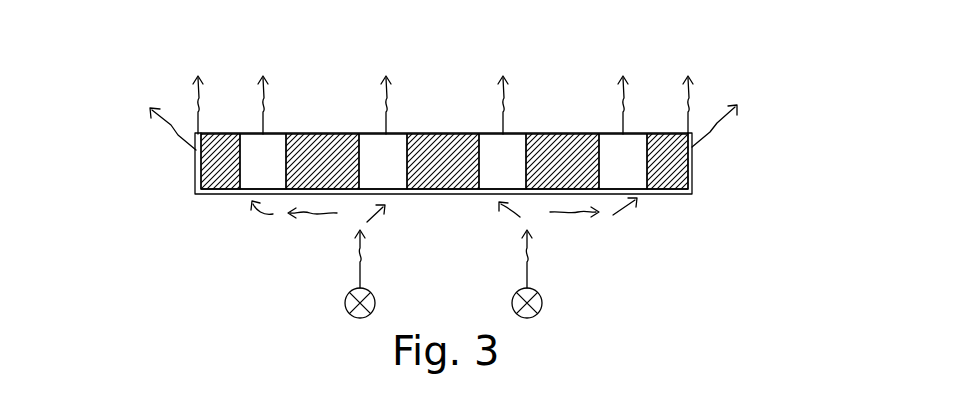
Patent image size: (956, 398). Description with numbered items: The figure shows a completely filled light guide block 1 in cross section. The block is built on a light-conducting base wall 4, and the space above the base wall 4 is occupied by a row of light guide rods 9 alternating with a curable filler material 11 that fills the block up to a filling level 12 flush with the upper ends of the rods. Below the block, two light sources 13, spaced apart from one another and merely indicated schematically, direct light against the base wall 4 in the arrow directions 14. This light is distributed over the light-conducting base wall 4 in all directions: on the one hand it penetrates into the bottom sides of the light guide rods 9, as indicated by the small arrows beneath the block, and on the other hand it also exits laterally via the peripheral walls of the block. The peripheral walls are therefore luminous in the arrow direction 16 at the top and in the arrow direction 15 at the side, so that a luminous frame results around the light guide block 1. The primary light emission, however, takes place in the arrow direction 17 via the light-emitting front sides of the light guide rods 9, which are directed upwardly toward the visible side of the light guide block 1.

The light guide block 1 is at (716, 54).
The base wall 4 is at (445, 191).
The light guide rod 9 is at (367, 135).
The filler material 11 is at (297, 136).
The filling level 12 is at (545, 130).
The light source 13 is at (512, 303).
The arrow direction 14 is at (355, 272).
The arrow direction 15 is at (160, 123).
The arrow direction 16 is at (195, 92).
The arrow direction 17 is at (260, 92).